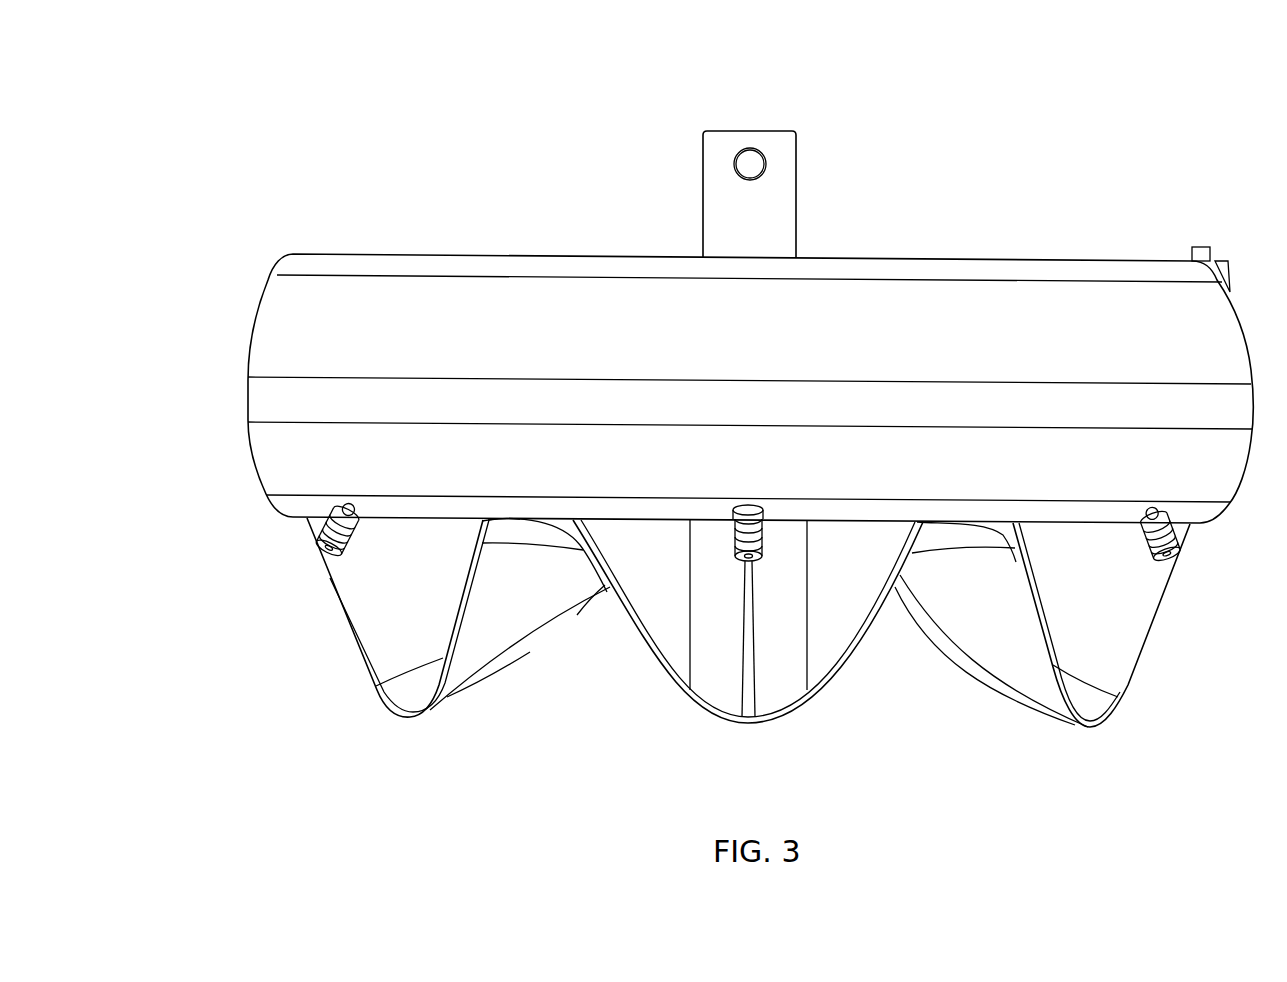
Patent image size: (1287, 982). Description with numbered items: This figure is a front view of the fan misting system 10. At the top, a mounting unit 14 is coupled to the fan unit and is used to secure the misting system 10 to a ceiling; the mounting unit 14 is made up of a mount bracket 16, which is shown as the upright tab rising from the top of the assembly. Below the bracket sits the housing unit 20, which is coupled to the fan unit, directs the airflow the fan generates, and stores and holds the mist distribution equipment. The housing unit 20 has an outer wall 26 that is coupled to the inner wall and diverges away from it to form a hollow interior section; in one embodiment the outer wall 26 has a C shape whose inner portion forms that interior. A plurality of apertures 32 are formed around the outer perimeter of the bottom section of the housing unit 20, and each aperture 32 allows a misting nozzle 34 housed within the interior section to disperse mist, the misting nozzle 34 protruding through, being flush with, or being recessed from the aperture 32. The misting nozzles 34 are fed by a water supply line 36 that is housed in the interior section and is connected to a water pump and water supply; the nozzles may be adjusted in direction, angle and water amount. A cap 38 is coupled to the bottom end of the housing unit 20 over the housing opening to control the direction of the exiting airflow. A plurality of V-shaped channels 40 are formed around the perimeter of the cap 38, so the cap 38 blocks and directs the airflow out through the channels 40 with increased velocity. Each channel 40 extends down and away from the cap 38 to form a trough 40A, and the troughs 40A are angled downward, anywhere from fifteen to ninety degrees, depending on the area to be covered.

The fan misting system 10 is at (394, 186).
The mounting unit 14 is at (832, 118).
The mount bracket 16 is at (770, 195).
The housing unit 20 is at (246, 339).
The outer wall 26 is at (276, 314).
The apertures 32 is at (1170, 520).
The misting nozzle 34 is at (322, 544).
The water supply line 36 is at (748, 611).
The cap 38 is at (485, 522).
The channels 40 is at (372, 701).
The trough 40A is at (718, 673).